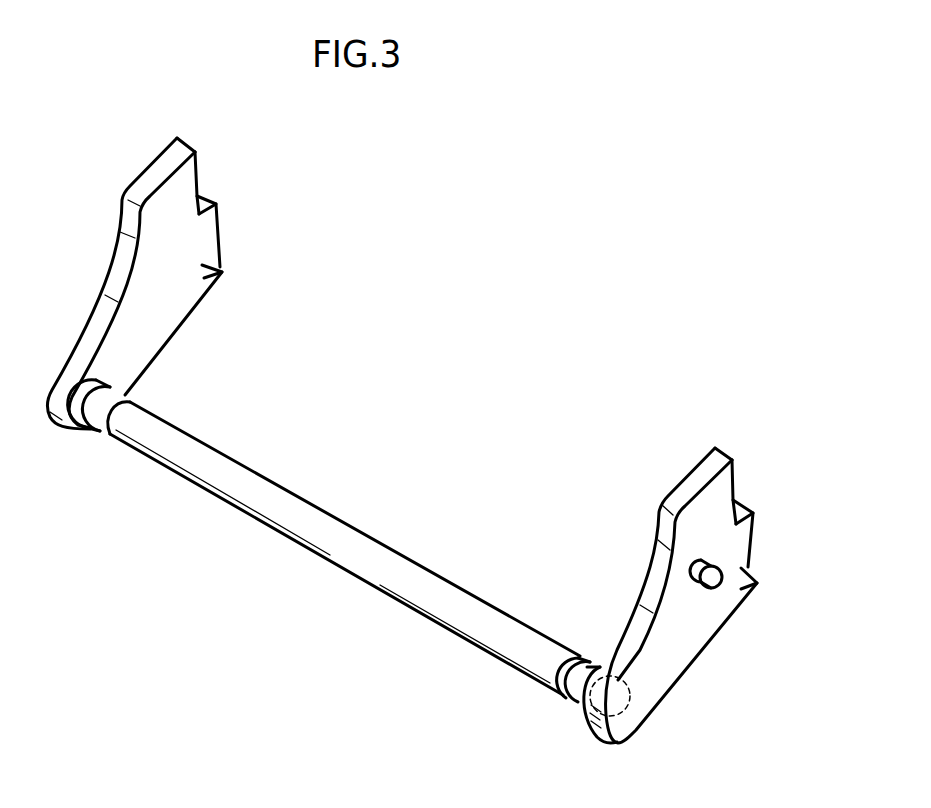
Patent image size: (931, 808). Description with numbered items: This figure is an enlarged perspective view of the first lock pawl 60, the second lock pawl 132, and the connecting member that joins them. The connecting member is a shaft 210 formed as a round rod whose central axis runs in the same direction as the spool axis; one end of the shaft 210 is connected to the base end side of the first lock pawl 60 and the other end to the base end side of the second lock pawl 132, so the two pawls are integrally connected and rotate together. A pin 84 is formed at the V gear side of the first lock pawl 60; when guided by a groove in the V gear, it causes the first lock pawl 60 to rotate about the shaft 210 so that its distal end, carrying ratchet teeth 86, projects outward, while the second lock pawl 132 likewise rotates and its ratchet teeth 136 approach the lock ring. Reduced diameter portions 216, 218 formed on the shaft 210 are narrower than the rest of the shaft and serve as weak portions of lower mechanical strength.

The first lock pawl 60 is at (686, 644).
The pin 84 is at (700, 560).
The ratchet teeth 86 is at (739, 513).
The second lock pawl 132 is at (173, 298).
The ratchet teeth 136 is at (213, 239).
The shaft 210 is at (333, 530).
The reduced diameter portion 216 is at (577, 657).
The reduced diameter portion 218 is at (133, 392).